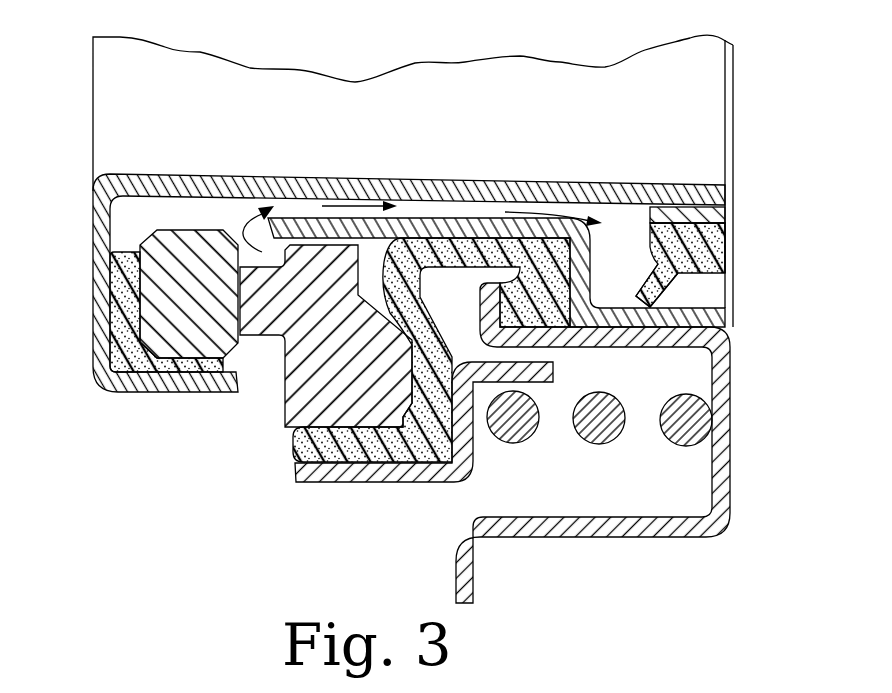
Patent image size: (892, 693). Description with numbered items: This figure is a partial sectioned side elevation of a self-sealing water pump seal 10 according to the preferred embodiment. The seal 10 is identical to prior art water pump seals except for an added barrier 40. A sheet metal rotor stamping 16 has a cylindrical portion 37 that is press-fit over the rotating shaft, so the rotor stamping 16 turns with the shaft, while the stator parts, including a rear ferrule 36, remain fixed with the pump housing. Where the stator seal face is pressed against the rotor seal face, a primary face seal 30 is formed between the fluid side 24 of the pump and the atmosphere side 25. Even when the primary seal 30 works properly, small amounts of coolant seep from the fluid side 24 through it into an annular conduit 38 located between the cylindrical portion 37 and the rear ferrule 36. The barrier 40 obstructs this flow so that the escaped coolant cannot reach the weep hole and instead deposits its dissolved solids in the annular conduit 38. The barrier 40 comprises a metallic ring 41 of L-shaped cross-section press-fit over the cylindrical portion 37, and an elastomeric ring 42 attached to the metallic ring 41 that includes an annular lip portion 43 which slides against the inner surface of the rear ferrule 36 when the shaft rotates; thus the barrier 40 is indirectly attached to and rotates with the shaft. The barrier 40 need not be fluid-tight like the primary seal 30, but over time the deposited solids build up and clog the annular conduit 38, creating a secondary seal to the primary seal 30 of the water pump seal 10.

The water pump seal 10 is at (72, 192).
The rotor stamping 16 is at (110, 389).
The fluid side 24 is at (139, 445).
The atmosphere side 25 is at (823, 288).
The primary face seal 30 is at (240, 292).
The rear ferrule 36 is at (727, 318).
The cylindrical portion 37 is at (299, 177).
The annular conduit 38 is at (468, 207).
The barrier 40 is at (733, 224).
The metallic ring 41 is at (734, 220).
The elastomeric ring 42 is at (727, 273).
The annular lip portion 43 is at (672, 288).